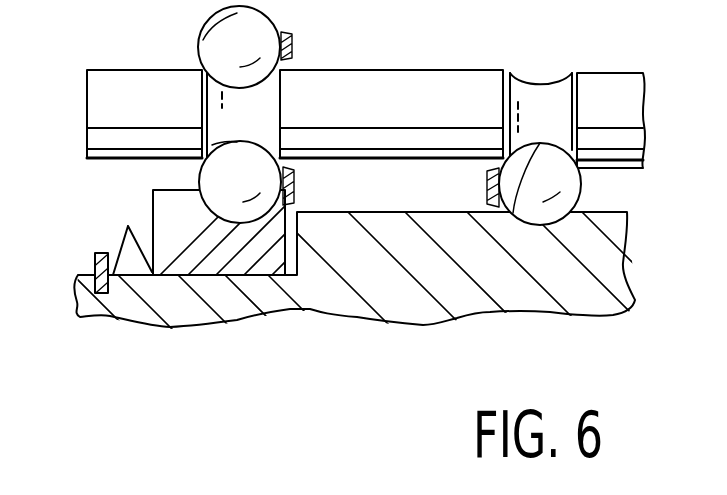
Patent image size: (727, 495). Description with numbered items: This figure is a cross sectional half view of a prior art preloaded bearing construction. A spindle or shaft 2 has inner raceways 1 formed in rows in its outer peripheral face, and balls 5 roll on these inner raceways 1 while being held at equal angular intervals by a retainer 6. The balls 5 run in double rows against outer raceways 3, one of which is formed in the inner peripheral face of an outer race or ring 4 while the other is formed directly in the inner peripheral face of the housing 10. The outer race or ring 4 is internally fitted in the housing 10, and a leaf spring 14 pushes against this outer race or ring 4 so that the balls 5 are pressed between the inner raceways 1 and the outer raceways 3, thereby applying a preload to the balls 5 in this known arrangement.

The inner raceway 1 is at (270, 146).
The spindle or shaft 2 is at (462, 92).
The outer raceway 3 is at (582, 183).
The outer race or ring 4 is at (190, 265).
The ball 5 is at (210, 44).
The retainer 6 is at (342, 168).
The housing 10 is at (448, 298).
The leaf spring 14 is at (118, 244).